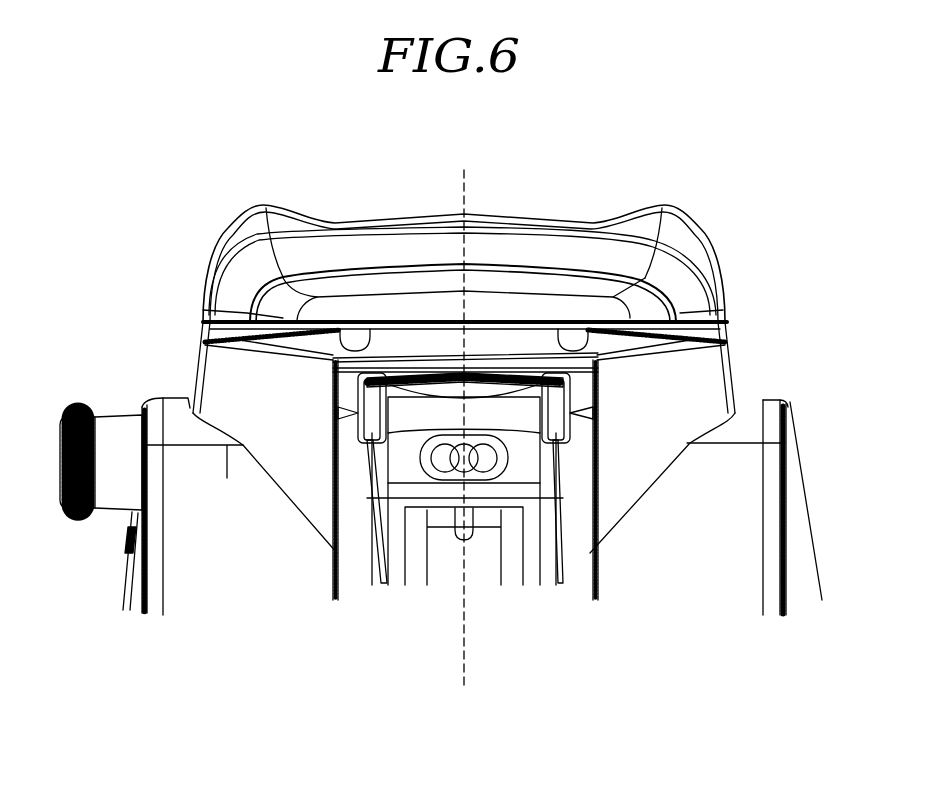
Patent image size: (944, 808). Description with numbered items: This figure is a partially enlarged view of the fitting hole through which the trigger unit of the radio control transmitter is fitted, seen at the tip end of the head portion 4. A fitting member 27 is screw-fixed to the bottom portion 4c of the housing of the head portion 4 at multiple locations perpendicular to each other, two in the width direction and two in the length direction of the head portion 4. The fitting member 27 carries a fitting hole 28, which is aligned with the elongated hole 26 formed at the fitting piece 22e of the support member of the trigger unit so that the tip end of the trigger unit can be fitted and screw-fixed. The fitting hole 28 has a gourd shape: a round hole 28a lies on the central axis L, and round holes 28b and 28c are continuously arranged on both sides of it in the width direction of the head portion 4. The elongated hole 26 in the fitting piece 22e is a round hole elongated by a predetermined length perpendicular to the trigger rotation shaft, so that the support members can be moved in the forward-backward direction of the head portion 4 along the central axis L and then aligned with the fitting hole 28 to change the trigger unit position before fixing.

The head portion 4 is at (678, 385).
The bottom portion 4c is at (250, 374).
The fitting member 27 is at (524, 450).
The fitting hole 28 is at (571, 557).
The round hole 28a is at (466, 470).
The round hole 28b is at (447, 468).
The round hole 28c is at (485, 466).
The elongated hole 26 is at (457, 540).
The fitting piece 22e is at (490, 562).
The central axis L is at (462, 430).